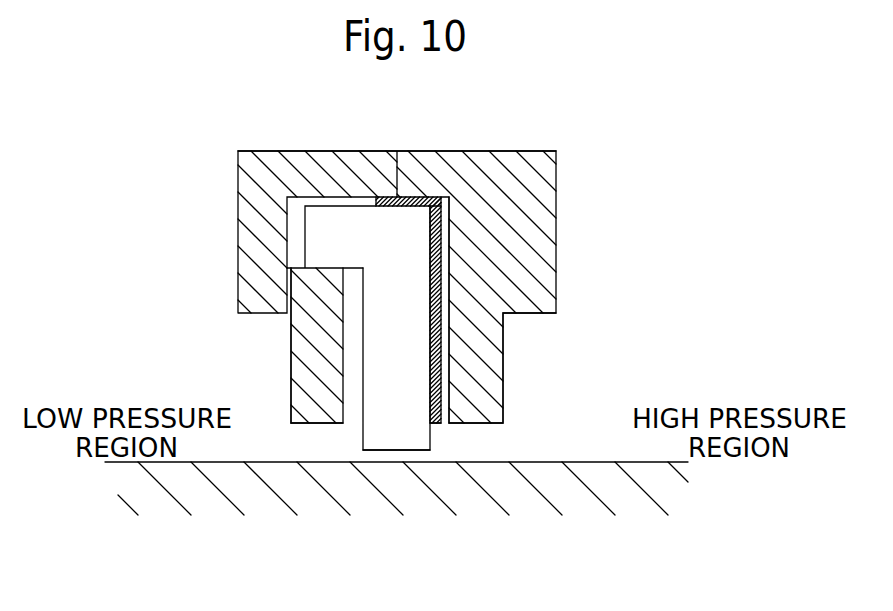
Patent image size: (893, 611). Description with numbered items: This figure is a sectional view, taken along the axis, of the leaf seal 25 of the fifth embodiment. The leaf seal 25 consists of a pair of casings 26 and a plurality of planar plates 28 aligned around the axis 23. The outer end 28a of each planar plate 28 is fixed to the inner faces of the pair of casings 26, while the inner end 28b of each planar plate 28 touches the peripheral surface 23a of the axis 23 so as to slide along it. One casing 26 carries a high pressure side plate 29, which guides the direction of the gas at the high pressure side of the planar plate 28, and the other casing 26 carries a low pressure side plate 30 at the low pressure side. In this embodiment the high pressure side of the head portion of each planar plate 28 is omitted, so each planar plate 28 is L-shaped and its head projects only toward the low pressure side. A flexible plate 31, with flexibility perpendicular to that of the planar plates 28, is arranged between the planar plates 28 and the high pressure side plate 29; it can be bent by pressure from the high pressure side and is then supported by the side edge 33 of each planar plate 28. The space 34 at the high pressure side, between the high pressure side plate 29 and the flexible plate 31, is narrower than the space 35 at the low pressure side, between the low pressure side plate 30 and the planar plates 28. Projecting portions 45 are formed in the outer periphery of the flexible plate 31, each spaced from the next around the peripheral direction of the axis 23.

The axis 23 is at (600, 512).
The peripheral surface 23a is at (611, 462).
The leaf seal 25 is at (572, 146).
The casings 26 is at (321, 163).
The planar plate 28 is at (366, 337).
The outer end 28a is at (322, 238).
The inner end 28b is at (380, 440).
The high pressure side plate 29 is at (483, 380).
The low pressure side plate 30 is at (303, 385).
The flexible plate 31 is at (439, 359).
The side edge 33 is at (432, 312).
The space at the high pressure side 34 is at (446, 427).
The space at the low pressure side 35 is at (348, 421).
The projecting portion 45 is at (417, 197).